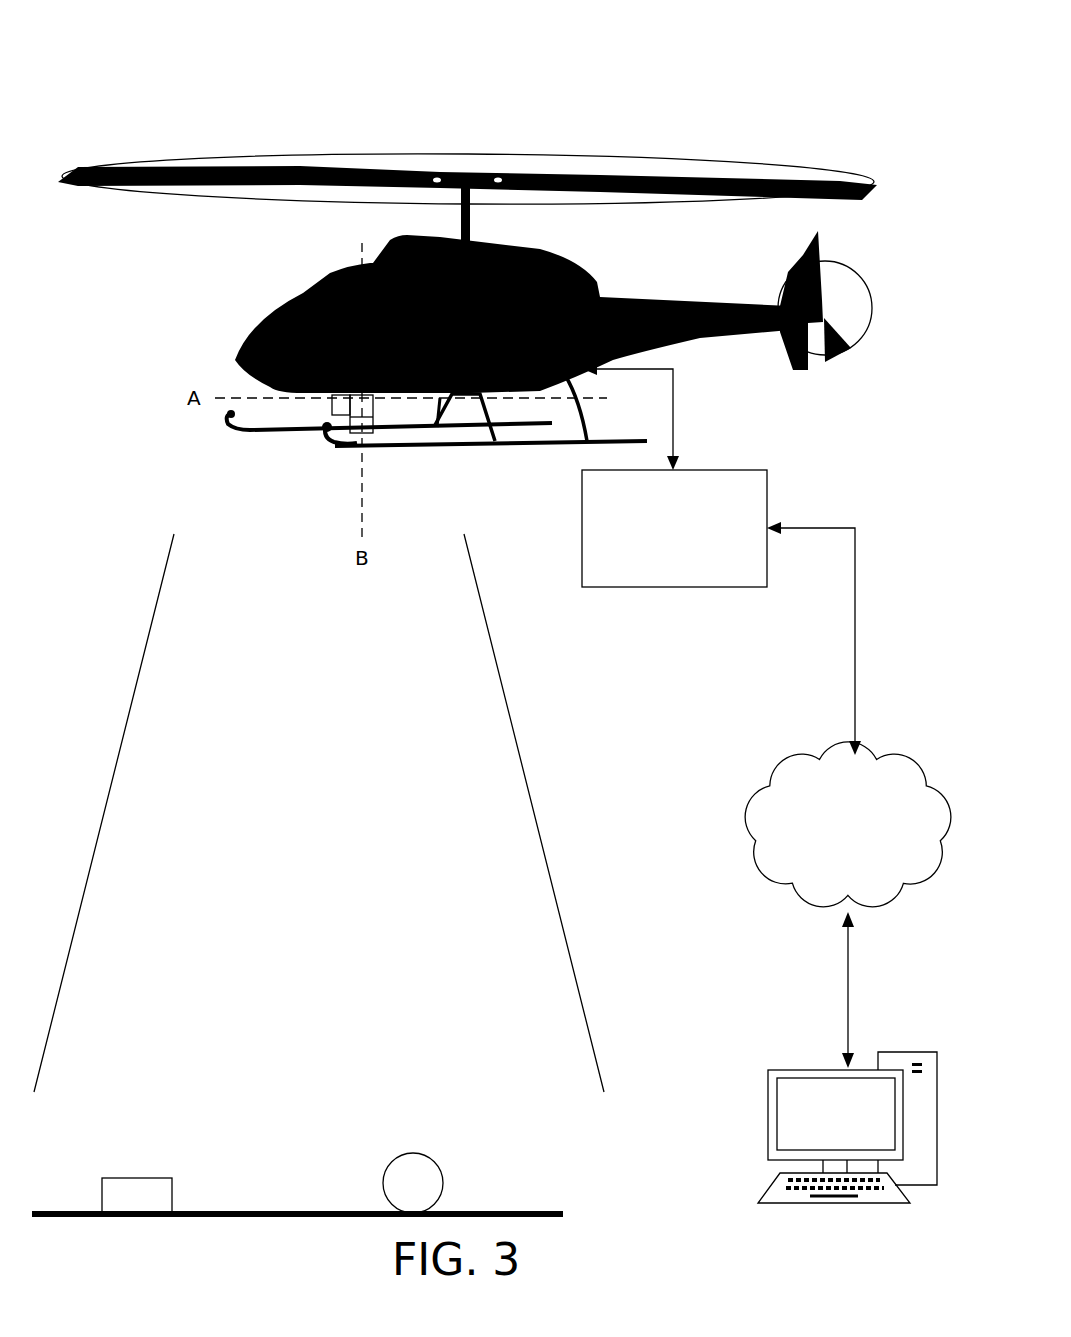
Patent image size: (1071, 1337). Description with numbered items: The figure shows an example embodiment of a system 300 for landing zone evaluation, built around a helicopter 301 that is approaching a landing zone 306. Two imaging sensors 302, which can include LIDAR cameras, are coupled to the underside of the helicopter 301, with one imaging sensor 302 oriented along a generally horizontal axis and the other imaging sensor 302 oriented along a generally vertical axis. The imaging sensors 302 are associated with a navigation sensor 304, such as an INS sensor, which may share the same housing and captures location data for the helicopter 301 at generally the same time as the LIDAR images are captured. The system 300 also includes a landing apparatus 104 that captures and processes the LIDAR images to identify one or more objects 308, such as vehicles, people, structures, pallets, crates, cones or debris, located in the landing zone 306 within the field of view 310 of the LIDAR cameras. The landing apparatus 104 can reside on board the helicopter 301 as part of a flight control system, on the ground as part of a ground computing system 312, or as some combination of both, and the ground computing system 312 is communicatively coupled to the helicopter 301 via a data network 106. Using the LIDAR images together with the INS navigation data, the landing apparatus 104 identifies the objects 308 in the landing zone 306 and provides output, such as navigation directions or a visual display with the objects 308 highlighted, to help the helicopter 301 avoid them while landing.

The system 300 is at (151, 55).
The helicopter 301 is at (310, 287).
The imaging sensors 302 is at (332, 405).
The navigation sensor 304 is at (373, 411).
The landing zone 306 is at (204, 1216).
The objects 308 is at (119, 1206).
The field of view 310 is at (514, 744).
The ground computing system 312 is at (823, 1070).
The landing apparatus 104 is at (655, 567).
The data network 106 is at (830, 849).